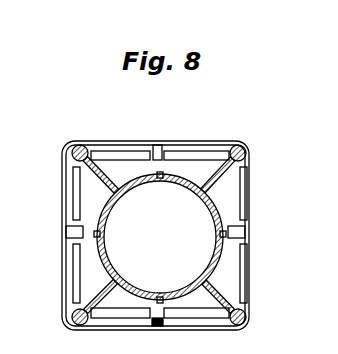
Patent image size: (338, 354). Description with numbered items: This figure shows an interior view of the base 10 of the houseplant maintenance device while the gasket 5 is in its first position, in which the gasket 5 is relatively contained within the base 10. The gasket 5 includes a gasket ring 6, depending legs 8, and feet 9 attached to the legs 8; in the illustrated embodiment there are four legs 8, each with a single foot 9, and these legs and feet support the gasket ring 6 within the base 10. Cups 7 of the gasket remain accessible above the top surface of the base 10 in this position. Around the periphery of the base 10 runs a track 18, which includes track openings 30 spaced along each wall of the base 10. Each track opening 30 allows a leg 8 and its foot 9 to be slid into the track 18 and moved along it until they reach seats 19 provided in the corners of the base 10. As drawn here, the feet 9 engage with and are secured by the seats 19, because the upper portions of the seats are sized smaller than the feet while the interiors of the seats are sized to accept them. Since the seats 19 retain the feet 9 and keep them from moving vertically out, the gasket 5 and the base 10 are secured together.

The base 10 is at (66, 279).
The track 18 is at (72, 193).
The track openings 30 is at (157, 145).
The feet 9 is at (247, 153).
The seats 19 is at (246, 313).
The cups 7 is at (161, 170).
The gasket 5 is at (209, 197).
The legs 8 is at (221, 290).
The gasket ring 6 is at (118, 286).